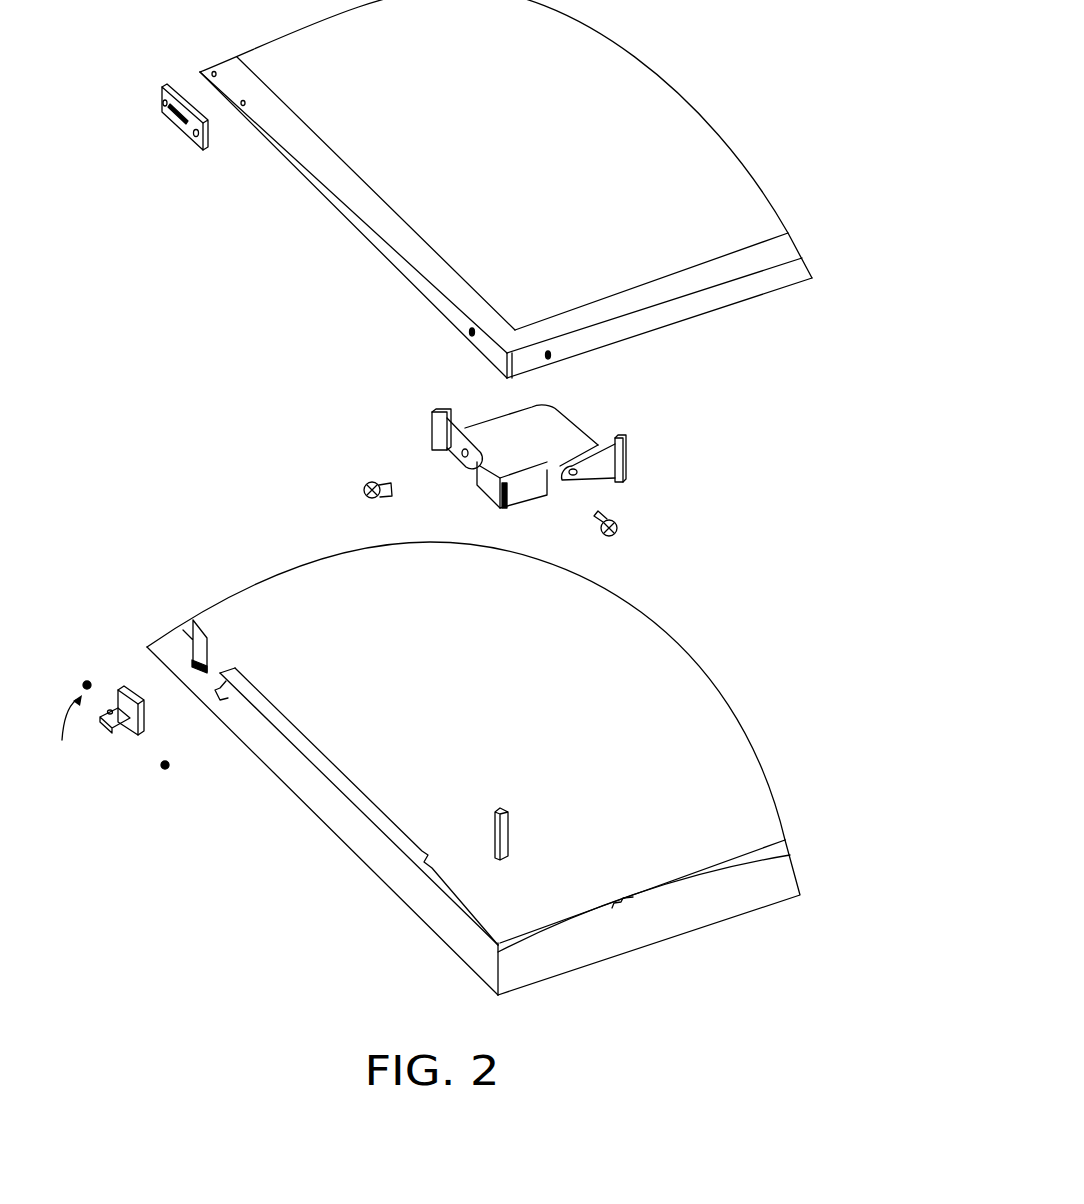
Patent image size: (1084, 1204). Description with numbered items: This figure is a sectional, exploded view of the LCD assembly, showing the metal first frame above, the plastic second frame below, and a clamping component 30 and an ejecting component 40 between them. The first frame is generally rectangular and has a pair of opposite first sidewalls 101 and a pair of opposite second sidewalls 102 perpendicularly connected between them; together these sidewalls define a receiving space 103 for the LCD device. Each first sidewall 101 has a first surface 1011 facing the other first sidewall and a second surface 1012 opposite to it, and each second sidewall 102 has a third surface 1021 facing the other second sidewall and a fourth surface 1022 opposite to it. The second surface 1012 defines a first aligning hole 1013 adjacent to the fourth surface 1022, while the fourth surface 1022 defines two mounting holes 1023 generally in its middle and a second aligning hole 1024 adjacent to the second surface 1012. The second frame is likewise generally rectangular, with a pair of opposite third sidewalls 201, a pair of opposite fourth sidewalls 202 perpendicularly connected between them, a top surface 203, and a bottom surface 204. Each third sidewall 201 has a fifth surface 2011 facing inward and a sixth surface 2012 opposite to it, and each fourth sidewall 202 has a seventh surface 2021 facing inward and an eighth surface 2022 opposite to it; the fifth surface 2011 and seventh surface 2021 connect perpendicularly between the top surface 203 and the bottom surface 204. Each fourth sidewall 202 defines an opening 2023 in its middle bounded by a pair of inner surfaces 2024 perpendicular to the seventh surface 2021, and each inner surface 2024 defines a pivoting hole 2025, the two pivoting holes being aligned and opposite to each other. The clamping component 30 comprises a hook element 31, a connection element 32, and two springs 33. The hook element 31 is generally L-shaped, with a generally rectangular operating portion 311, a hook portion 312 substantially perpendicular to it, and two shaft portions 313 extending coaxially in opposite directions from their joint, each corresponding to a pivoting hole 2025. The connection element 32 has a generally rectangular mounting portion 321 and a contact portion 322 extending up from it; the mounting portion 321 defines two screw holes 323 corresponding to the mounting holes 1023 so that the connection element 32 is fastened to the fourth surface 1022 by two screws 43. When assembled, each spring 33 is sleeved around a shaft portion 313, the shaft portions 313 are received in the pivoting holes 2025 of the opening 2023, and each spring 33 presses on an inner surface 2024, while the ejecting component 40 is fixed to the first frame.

The first sidewall 101 is at (659, 340).
The first surface 1011 is at (725, 258).
The second surface 1012 is at (680, 310).
The first aligning hole 1013 is at (592, 372).
The second sidewall 102 is at (339, 196).
The third surface 1021 is at (392, 210).
The fourth surface 1022 is at (337, 198).
The mounting hole 1023 is at (212, 72).
The second aligning hole 1024 is at (470, 334).
The receiving space 103 is at (632, 73).
The third sidewall 201 is at (647, 920).
The fifth surface 2011 is at (702, 872).
The sixth surface 2012 is at (765, 986).
The fourth sidewall 202 is at (446, 768).
The seventh surface 2021 is at (410, 848).
The eighth surface 2022 is at (357, 845).
The opening 2023 is at (212, 677).
The inner surface 2024 is at (193, 620).
The pivoting hole 2025 is at (193, 663).
The top surface 203 is at (312, 757).
The bottom surface 204 is at (318, 818).
The clamping component 30 is at (143, 444).
The hook element 31 is at (138, 715).
The operating portion 311 is at (130, 740).
The hook portion 312 is at (126, 704).
The shaft portion 313 is at (110, 708).
The connection element 32 is at (159, 124).
The mounting portion 321 is at (165, 118).
The contact portion 322 is at (180, 122).
The screw hole 323 is at (205, 136).
The spring 33 is at (65, 734).
The ejecting component 40 is at (642, 494).
The screw 43 is at (375, 482).